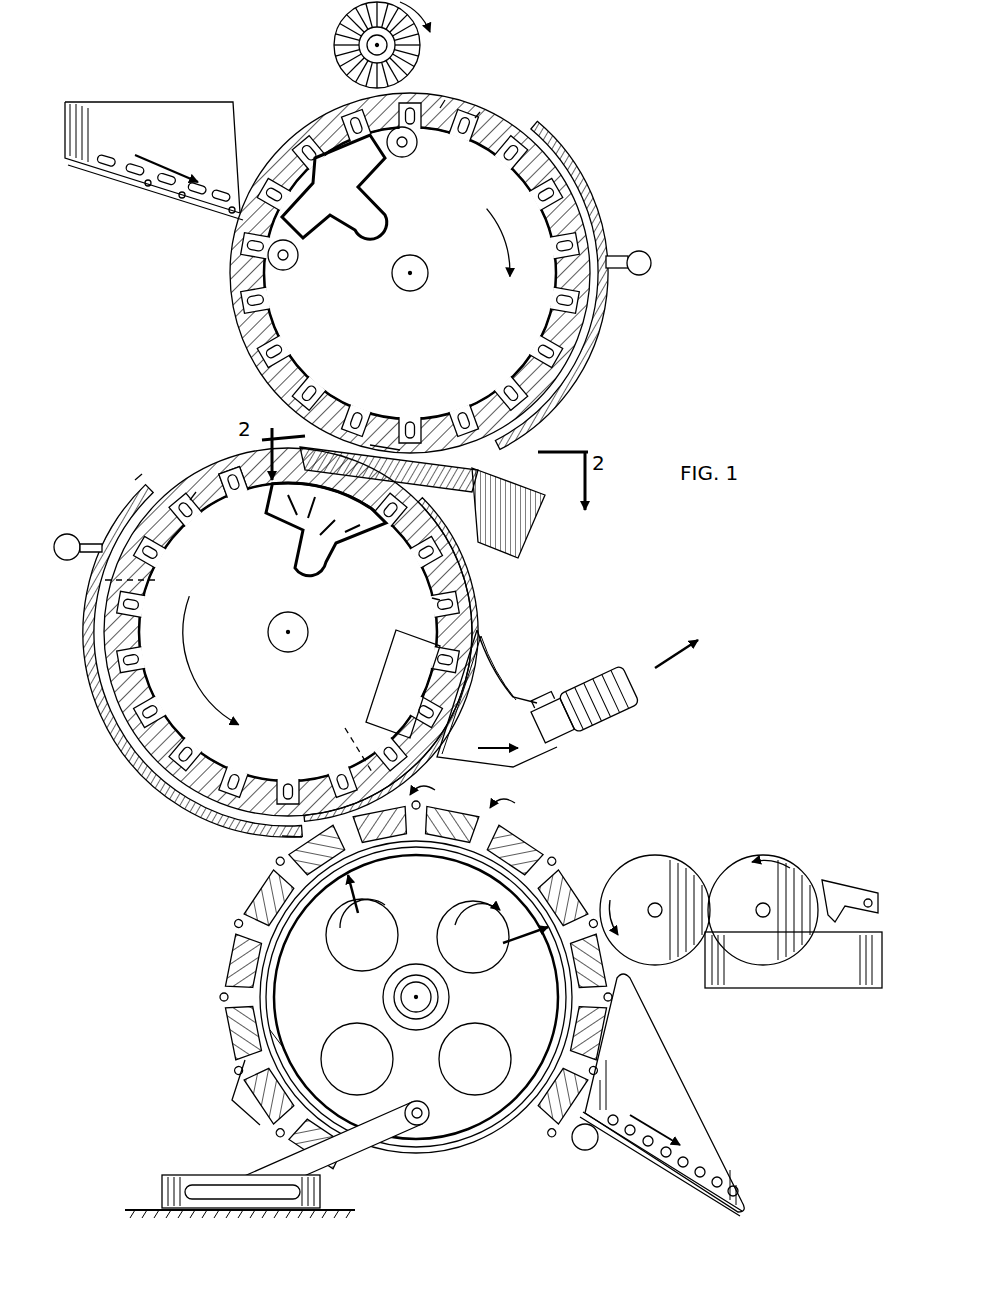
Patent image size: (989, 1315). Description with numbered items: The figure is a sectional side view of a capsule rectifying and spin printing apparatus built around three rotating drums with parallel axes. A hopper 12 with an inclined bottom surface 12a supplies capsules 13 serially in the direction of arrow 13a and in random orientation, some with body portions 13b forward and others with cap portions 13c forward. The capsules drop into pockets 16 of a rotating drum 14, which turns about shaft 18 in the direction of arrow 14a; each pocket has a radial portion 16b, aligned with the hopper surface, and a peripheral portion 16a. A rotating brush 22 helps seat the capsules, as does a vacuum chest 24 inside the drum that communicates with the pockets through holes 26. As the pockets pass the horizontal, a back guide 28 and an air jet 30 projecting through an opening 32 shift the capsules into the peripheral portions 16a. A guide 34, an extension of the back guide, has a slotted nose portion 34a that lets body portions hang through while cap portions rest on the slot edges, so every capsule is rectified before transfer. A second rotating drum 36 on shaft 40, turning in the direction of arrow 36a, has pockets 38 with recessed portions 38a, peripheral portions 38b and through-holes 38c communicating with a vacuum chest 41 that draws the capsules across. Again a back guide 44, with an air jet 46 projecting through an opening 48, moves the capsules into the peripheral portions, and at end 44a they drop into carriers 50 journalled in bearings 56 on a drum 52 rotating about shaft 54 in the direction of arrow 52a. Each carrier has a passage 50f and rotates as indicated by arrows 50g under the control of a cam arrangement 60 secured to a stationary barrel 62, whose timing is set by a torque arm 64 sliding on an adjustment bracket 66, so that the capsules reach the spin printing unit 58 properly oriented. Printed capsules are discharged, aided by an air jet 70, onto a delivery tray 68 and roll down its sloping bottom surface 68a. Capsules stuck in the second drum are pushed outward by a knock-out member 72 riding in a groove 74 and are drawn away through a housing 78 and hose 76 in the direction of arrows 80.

The hopper 12 is at (140, 115).
The inclined bottom surface 12a is at (80, 166).
The capsules 13 is at (108, 160).
The arrow 13a is at (205, 178).
The body portions 13b is at (148, 186).
The cap portions 13c is at (182, 198).
The rotating drum 14 is at (500, 128).
The arrow 14a is at (497, 222).
The pockets 16 is at (272, 327).
The peripheral portion 16a is at (480, 112).
The radial portion 16b is at (445, 100).
The shaft 18 is at (428, 280).
The rotating brush 22 is at (335, 50).
The vacuum chest 24 is at (375, 178).
The through holes 26 is at (318, 160).
The back guide 28 is at (604, 205).
The air jet 30 is at (652, 264).
The opening 32 is at (615, 240).
The guide 34 is at (430, 503).
The nose portion 34a is at (382, 440).
The second rotating drum 36 is at (195, 470).
The arrow 36a is at (184, 650).
The pockets 38 is at (172, 522).
The recessed portion 38a is at (192, 502).
The peripheral portions 38b is at (136, 481).
The through-holes 38c is at (436, 598).
The shaft 40 is at (266, 628).
The vacuum chest 41 is at (330, 566).
The back guide 44 is at (112, 522).
The end 44a is at (263, 850).
The air jet 46 is at (55, 542).
The opening 48 is at (92, 576).
The carriers 50 is at (508, 838).
The passage 50f is at (280, 1040).
The arrows 50g is at (480, 788).
The rotating drum 52 is at (572, 1008).
The arrow 52a is at (410, 890).
The shaft 54 is at (424, 998).
The bearings 56 is at (540, 846).
The spin printing unit 58 is at (665, 856).
The cam arrangement 60 is at (288, 938).
The stationary barrel 62 is at (235, 1065).
The torque arm 64 is at (280, 1160).
The adjustment bracket 66 is at (205, 1175).
The delivery tray 68 is at (695, 1075).
The sloping bottom surface 68a is at (655, 1160).
The air jet 70 is at (573, 1146).
The knock-out member 72 is at (375, 672).
The groove 74 is at (238, 670).
The hose 76 is at (585, 680).
The housing 78 is at (495, 662).
The arrows 80 is at (480, 746).